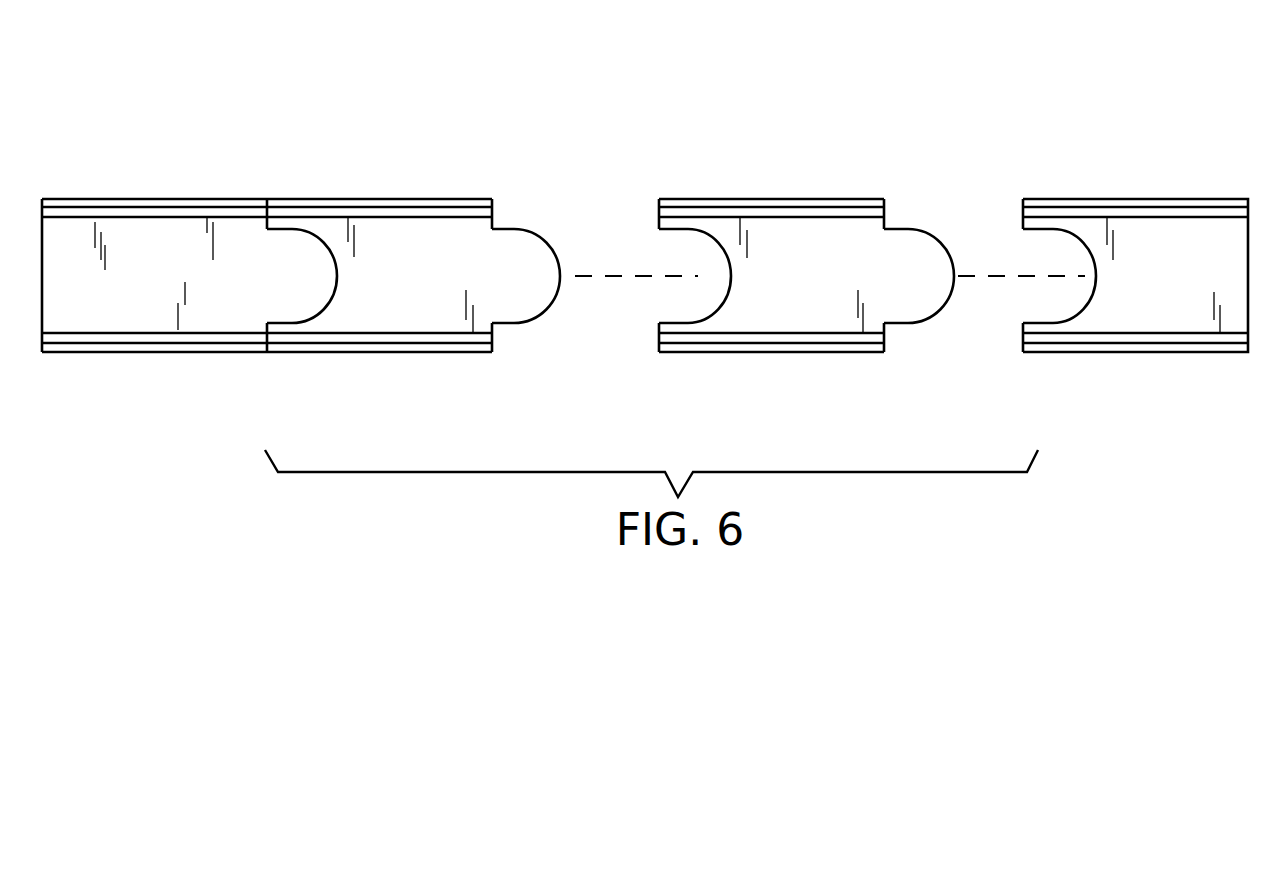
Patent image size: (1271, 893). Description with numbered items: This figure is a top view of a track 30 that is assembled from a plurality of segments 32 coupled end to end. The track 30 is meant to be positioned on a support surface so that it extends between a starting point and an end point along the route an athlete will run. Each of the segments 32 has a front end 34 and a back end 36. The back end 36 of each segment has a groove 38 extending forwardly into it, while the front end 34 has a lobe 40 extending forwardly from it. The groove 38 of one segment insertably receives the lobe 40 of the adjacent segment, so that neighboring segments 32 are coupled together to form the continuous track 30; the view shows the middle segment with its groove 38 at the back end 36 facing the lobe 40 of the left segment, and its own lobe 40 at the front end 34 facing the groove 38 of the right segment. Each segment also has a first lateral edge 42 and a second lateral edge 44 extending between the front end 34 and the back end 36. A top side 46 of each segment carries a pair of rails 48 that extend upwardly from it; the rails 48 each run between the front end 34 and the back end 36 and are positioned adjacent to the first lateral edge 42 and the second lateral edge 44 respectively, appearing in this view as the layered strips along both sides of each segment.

The track 30 is at (327, 198).
The segments 32 is at (445, 199).
The front end 34 is at (886, 208).
The back end 36 is at (658, 224).
The groove 38 is at (710, 303).
The lobe 40 is at (950, 233).
The first lateral edge 42 is at (787, 353).
The second lateral edge 44 is at (787, 199).
The top side 46 is at (827, 243).
The rails 48 is at (733, 218).